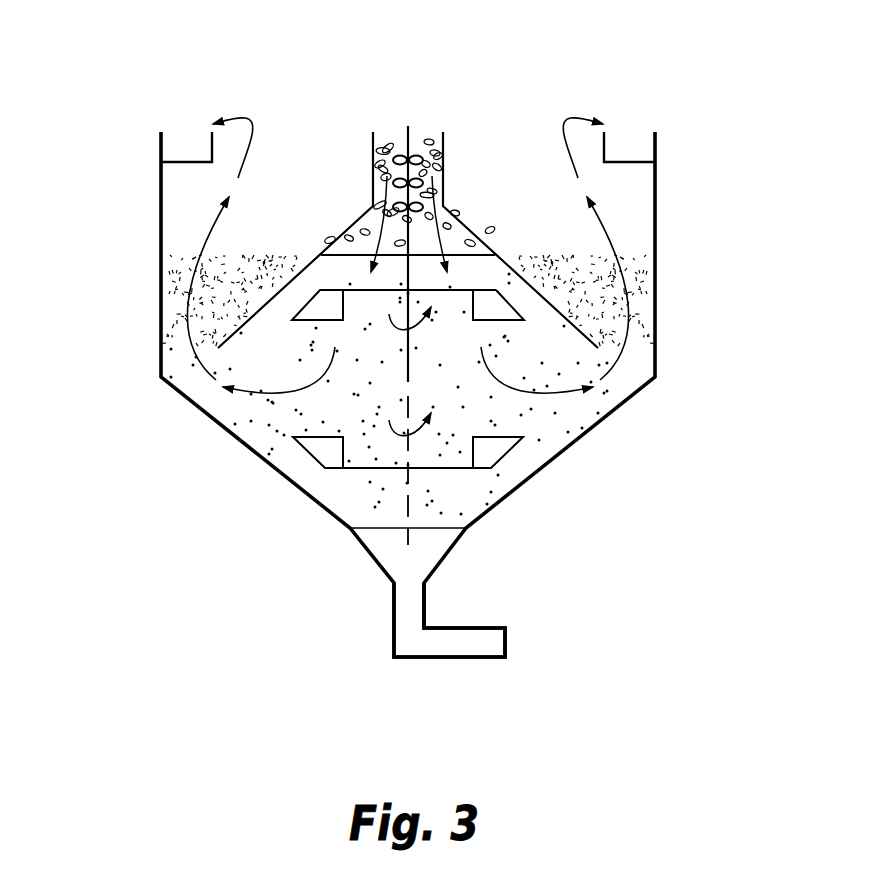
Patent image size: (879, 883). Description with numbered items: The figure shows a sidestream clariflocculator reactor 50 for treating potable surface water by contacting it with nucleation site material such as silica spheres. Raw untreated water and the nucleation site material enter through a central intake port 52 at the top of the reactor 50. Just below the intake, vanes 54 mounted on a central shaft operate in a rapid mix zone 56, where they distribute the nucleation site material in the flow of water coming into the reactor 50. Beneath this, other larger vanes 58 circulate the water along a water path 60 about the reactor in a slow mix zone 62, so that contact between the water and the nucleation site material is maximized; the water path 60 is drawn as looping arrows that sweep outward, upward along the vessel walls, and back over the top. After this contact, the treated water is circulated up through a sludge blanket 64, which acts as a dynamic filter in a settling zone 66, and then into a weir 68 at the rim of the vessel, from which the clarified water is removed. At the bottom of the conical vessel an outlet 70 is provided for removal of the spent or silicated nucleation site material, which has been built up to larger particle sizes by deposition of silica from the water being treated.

The reactor 50 is at (293, 225).
The central intake port 52 is at (395, 107).
The vanes 54 is at (397, 178).
The rapid mix zone 56 is at (430, 188).
The larger vanes 58 is at (307, 455).
The water path 60 is at (212, 240).
The slow mix zone 62 is at (630, 133).
The sludge blanket 64 is at (634, 268).
The settling zone 66 is at (183, 300).
The weir 68 is at (186, 138).
The outlet 70 is at (507, 642).